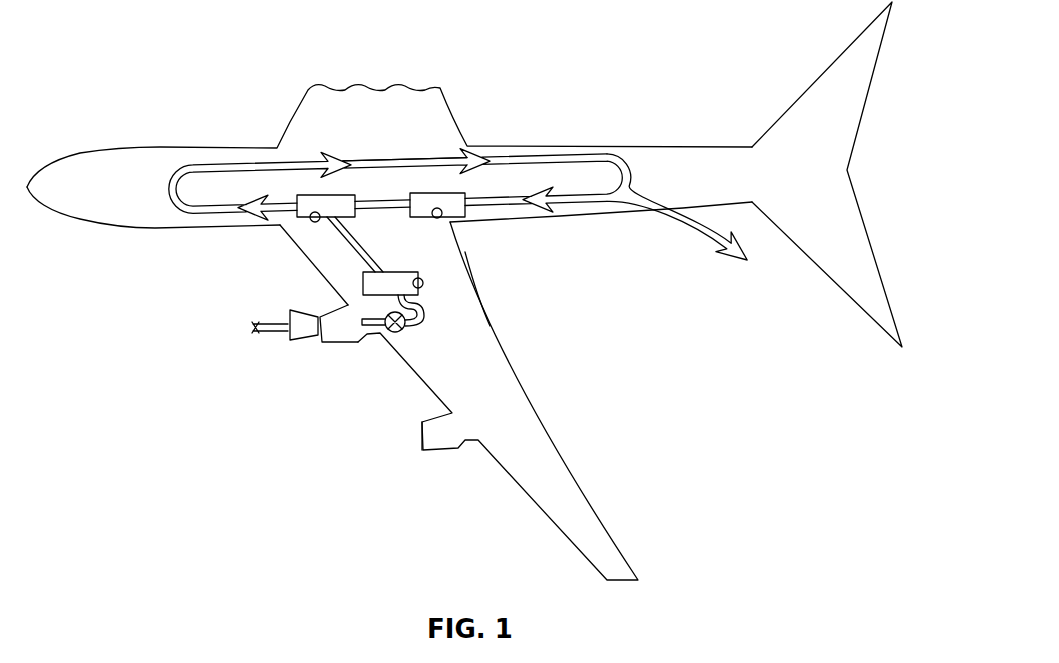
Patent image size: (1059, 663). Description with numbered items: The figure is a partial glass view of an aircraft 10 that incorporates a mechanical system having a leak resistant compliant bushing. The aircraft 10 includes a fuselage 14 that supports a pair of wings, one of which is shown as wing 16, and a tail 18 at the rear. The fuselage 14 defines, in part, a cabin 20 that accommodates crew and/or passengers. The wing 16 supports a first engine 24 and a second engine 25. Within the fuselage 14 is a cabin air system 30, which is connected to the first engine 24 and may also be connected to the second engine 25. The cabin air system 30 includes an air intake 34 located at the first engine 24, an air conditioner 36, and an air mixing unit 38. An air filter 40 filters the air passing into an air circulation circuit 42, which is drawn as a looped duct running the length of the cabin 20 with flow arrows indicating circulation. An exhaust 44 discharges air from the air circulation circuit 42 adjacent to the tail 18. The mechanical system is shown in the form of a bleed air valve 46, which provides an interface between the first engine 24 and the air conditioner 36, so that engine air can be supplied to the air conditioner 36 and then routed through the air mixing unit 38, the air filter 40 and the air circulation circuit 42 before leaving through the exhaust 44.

The aircraft 10 is at (464, 291).
The fuselage 14 is at (389, 183).
The wing 16 is at (459, 401).
The tail 18 is at (827, 174).
The cabin 20 is at (458, 189).
The first engine 24 is at (288, 350).
The second engine 25 is at (391, 452).
The cabin air system 30 is at (507, 312).
The air intake 34 is at (268, 339).
The air conditioner 36 is at (377, 271).
The air mixing unit 38 is at (308, 246).
The air filter 40 is at (456, 238).
The air circulation circuit 42 is at (459, 127).
The exhaust 44 is at (677, 226).
The bleed air valve 46 is at (405, 341).